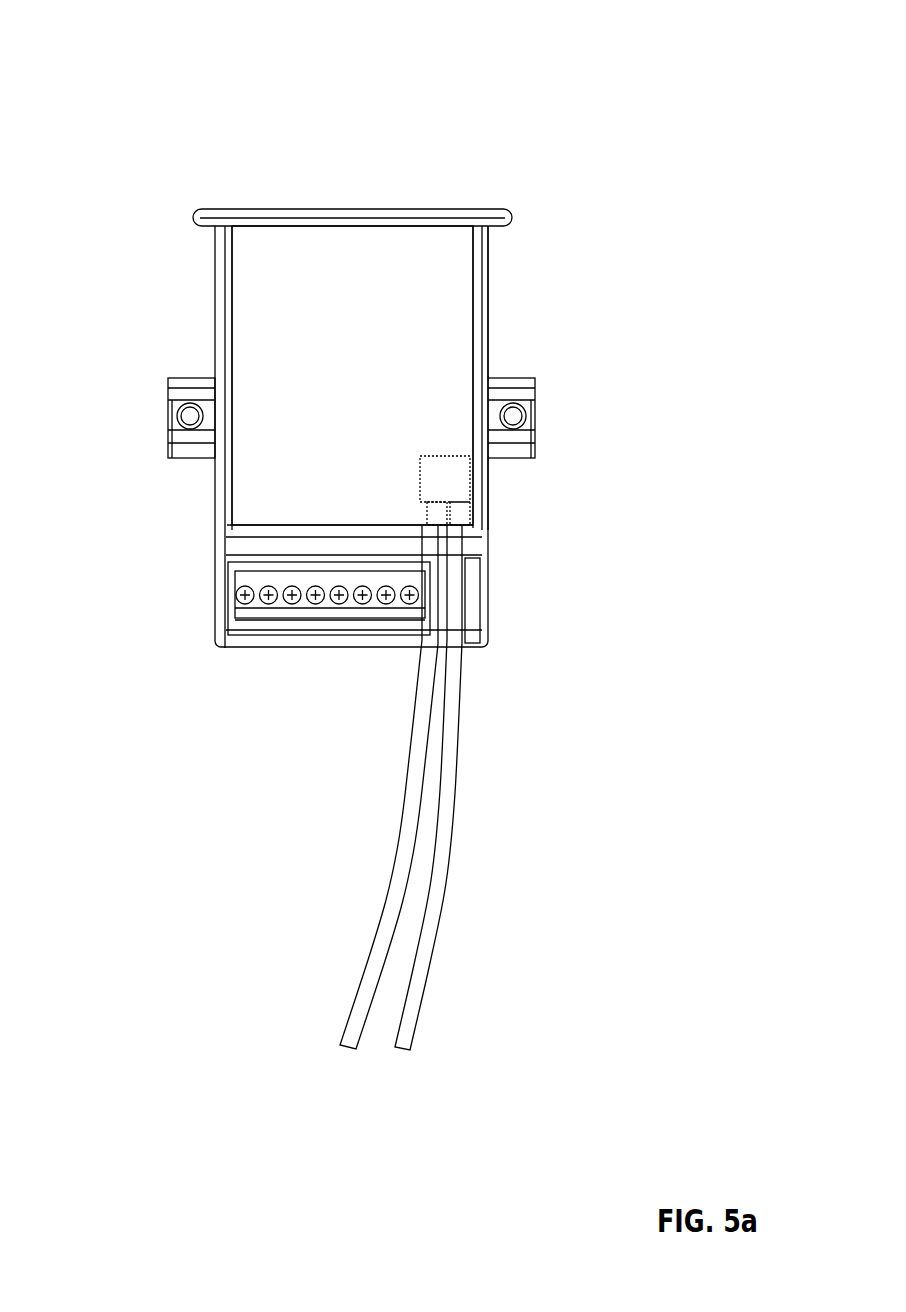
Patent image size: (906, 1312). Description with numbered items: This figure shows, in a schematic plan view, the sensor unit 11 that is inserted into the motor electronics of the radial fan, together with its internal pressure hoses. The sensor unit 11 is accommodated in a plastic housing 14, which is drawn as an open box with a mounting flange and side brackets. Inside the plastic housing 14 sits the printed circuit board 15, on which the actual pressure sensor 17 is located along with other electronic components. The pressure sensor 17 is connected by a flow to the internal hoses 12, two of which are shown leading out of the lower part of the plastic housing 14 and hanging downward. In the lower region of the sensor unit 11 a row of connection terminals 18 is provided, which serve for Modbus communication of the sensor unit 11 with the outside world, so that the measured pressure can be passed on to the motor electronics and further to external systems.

The sensor unit 11 is at (455, 160).
The hose 12 is at (405, 800).
The plastic housing 14 is at (488, 338).
The printed circuit board 15 is at (268, 303).
The pressure sensor 17 is at (463, 488).
The connection terminals 18 is at (322, 622).